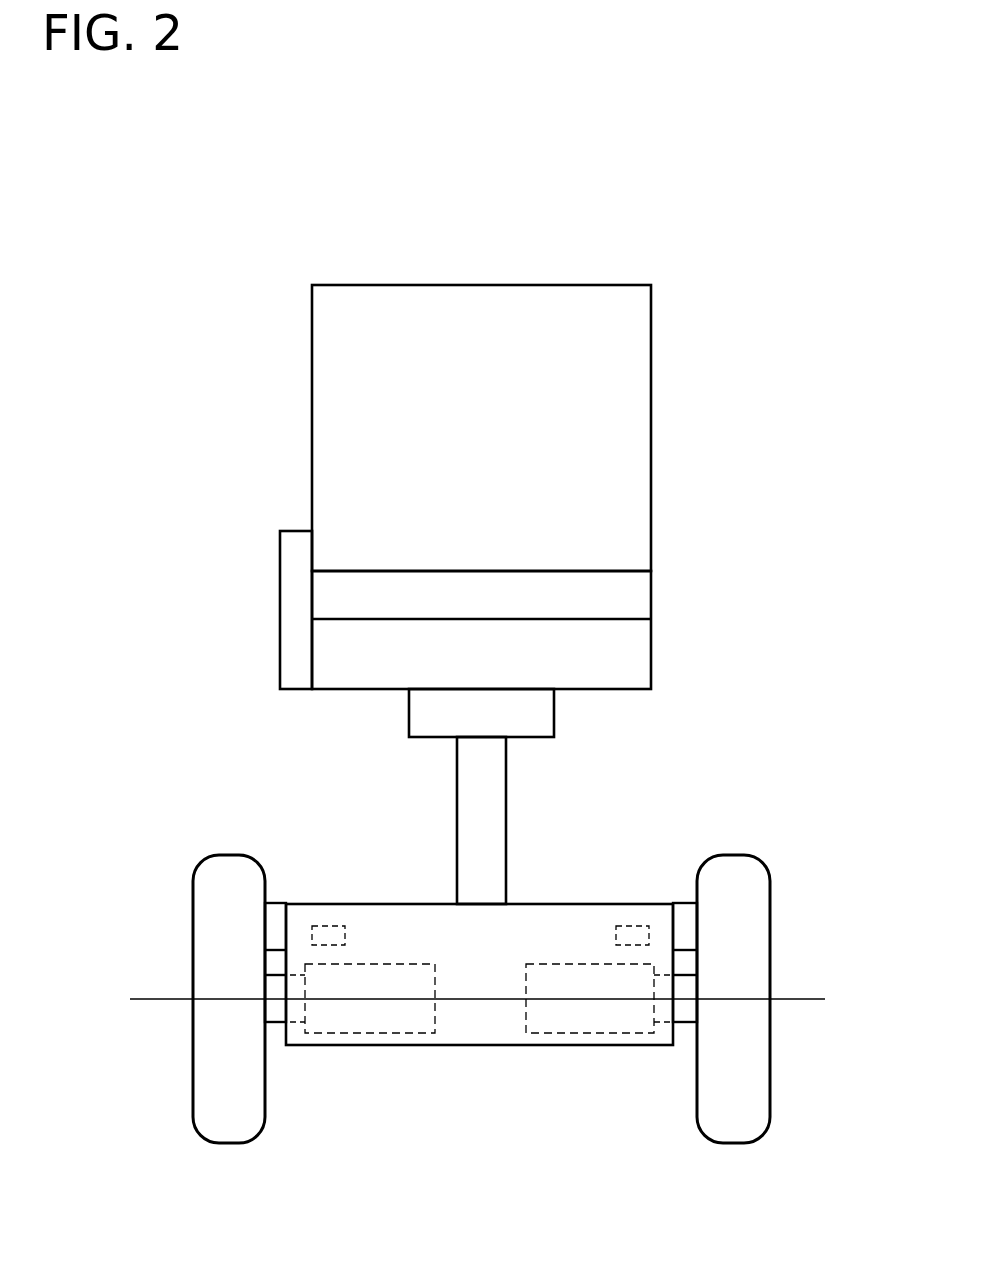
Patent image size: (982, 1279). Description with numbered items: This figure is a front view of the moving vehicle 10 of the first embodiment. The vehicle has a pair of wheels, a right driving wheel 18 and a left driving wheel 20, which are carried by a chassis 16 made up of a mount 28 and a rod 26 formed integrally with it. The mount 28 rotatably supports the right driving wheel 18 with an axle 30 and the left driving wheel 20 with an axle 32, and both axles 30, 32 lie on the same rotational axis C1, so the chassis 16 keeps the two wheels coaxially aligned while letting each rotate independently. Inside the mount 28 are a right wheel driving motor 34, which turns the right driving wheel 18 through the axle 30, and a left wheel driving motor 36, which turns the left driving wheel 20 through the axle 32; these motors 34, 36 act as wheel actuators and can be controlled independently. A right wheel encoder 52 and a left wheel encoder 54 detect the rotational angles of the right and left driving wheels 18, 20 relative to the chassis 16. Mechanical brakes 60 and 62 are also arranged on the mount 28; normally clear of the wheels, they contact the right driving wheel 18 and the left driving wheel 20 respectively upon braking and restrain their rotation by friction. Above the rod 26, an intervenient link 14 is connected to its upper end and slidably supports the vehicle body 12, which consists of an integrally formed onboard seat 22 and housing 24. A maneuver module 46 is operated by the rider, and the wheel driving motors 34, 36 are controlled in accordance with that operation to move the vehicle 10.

The moving vehicle 10 is at (499, 158).
The vehicle body 12 is at (700, 580).
The intervenient link 14 is at (555, 727).
The chassis 16 is at (573, 823).
The right driving wheel 18 is at (193, 1067).
The left driving wheel 20 is at (770, 1067).
The onboard seat 22 is at (651, 408).
The housing 24 is at (651, 648).
The rod 26 is at (457, 773).
The mount 28 is at (412, 903).
The axle 30 is at (272, 1023).
The axle 32 is at (686, 1023).
The right wheel driving motor 34 is at (370, 1034).
The left wheel driving motor 36 is at (590, 1034).
The maneuver module 46 is at (280, 610).
The right wheel encoder 52 is at (330, 904).
The left wheel encoder 54 is at (630, 925).
The mechanical brake 60 is at (272, 903).
The mechanical brake 62 is at (681, 903).
The rotational axis C1 is at (812, 999).